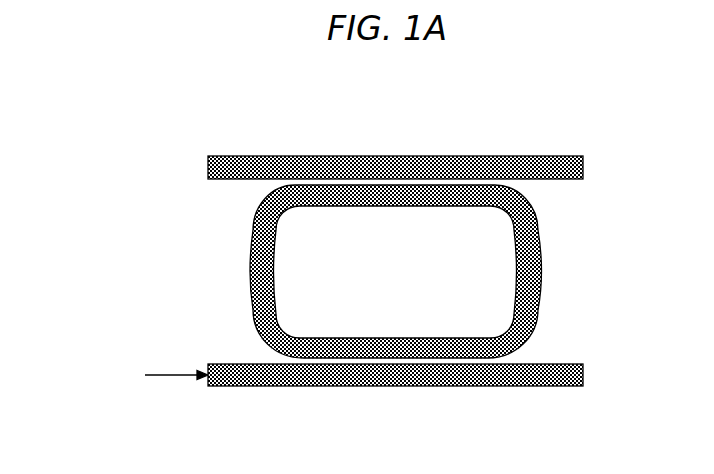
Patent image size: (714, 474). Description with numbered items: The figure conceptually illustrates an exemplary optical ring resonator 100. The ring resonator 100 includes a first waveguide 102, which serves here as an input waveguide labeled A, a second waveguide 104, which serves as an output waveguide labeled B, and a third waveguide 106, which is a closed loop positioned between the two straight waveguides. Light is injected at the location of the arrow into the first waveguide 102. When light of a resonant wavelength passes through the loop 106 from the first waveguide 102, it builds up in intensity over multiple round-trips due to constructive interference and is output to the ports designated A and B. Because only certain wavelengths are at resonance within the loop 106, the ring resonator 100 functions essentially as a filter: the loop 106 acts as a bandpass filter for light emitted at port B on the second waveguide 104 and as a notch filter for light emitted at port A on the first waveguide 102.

The ring resonator 100 is at (119, 186).
The first waveguide 102 is at (395, 386).
The second waveguide 104 is at (392, 156).
The third waveguide 106 is at (253, 263).